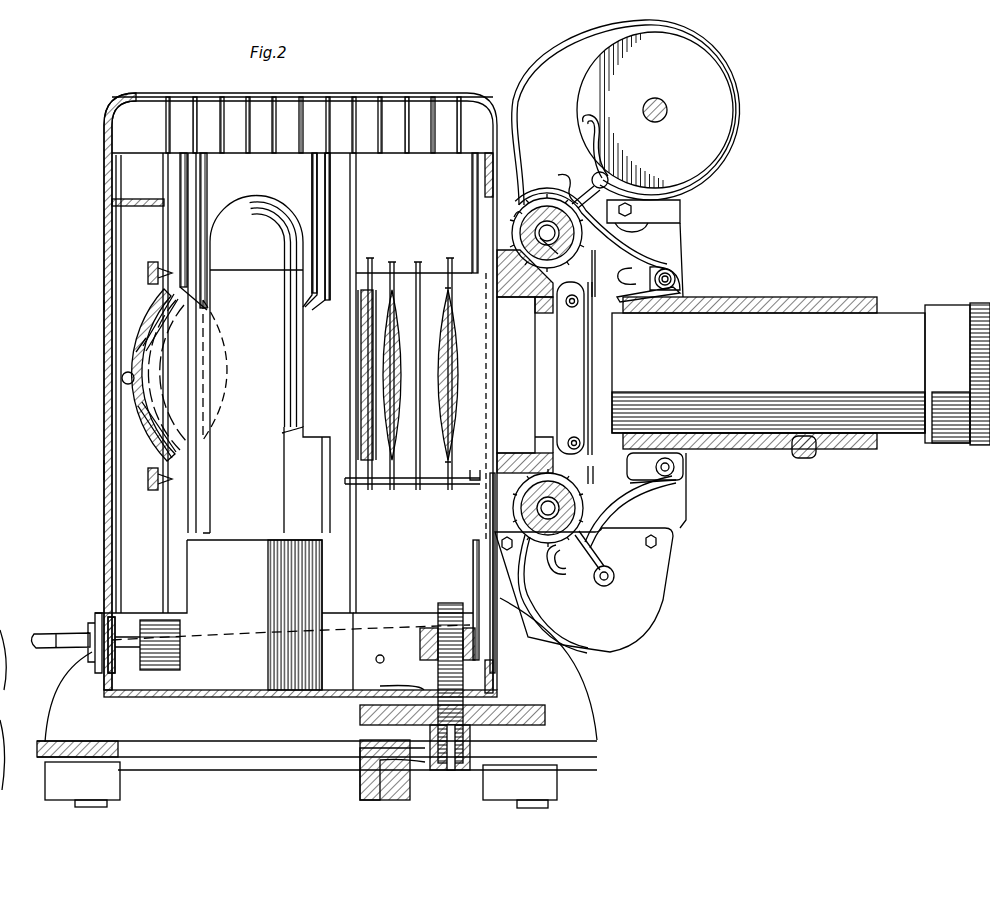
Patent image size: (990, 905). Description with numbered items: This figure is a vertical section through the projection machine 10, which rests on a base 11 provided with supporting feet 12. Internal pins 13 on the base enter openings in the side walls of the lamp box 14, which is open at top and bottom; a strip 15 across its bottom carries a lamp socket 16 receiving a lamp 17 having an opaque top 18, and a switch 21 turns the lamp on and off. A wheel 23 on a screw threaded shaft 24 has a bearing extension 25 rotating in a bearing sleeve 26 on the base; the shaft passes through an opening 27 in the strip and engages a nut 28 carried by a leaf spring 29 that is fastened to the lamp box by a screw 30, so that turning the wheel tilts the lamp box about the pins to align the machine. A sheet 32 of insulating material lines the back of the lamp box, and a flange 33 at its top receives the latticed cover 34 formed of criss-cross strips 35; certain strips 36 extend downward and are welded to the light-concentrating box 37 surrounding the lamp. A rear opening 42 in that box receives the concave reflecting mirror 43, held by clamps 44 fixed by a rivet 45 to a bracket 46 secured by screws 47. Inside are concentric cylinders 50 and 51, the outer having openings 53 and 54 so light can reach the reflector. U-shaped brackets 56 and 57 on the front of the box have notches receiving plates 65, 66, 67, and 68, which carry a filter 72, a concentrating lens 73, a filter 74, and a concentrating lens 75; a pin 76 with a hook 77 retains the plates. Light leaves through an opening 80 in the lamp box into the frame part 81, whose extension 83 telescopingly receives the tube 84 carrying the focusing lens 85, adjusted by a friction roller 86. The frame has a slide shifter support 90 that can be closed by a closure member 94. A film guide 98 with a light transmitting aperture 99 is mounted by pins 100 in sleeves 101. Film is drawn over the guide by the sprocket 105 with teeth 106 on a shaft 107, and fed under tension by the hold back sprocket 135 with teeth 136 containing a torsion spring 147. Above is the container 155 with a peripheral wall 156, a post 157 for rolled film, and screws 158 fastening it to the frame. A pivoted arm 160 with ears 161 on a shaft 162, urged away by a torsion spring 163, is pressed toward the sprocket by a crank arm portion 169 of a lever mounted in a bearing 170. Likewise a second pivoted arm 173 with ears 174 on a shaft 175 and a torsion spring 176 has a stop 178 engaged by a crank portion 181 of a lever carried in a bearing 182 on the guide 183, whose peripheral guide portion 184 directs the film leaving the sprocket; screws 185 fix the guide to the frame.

The projection machine 10 is at (98, 308).
The base 11 is at (268, 745).
The supporting feet 12 is at (557, 788).
The internal pins 13 is at (376, 659).
The lamp box 14 is at (104, 470).
The strip 15 is at (156, 697).
The lamp socket 16 is at (242, 685).
The lamp 17 is at (300, 432).
The opaque top 18 is at (260, 208).
The switch 21 is at (96, 623).
The wheel 23 is at (540, 706).
The screw threaded shaft 24 is at (438, 668).
The bearing extension 25 is at (448, 762).
The bearing sleeve 26 is at (432, 770).
The opening 27 is at (400, 682).
The nut 28 is at (420, 643).
The leaf spring 29 is at (473, 574).
The screw 30 is at (490, 470).
The sheet of insulating material 32 is at (116, 250).
The flange 33 is at (118, 196).
The latticed cover 34 is at (112, 106).
The lattice strips 35 is at (407, 97).
The lattice strips 36 is at (330, 97).
The light-concentrating box 37 is at (356, 573).
The opening 42 is at (150, 318).
The concave reflecting mirror 43 is at (150, 402).
The clamps 44 is at (136, 350).
The rivet 45 is at (122, 378).
The bracket 46 is at (140, 424).
The screws 47 is at (148, 478).
The inner cylinder 50 is at (207, 170).
The outer cylinder 51 is at (189, 187).
The opening 53 is at (206, 300).
The opening 54 is at (312, 292).
The U-shaped bracket 56 is at (472, 210).
The U-shaped bracket 57 is at (480, 527).
The plate 65 is at (370, 490).
The plate 66 is at (392, 490).
The plate 67 is at (420, 490).
The plate 68 is at (450, 490).
The filter 72 is at (361, 362).
The concentrating lens 73 is at (361, 340).
The filter 74 is at (428, 398).
The concentrating lens 75 is at (460, 345).
The pin 76 is at (394, 480).
The hook 77 is at (460, 472).
The opening 80 is at (498, 297).
The frame part 81 is at (545, 430).
The extension 83 is at (768, 300).
The tube 84 is at (828, 330).
The focusing lens 85 is at (948, 320).
The friction roller 86 is at (806, 458).
The slide shifter support 90 is at (525, 375).
The closure member 94 is at (512, 453).
The film guide 98 is at (557, 345).
The light transmitting aperture 99 is at (592, 400).
The pins 100 is at (582, 372).
The sleeves 101 is at (582, 372).
The sprocket 105 is at (565, 500).
The teeth 106 is at (594, 472).
The shaft 107 is at (512, 551).
The hold back and reverse feed sprocket 135 is at (550, 228).
The teeth 136 is at (518, 212).
The torsion spring 147 is at (556, 258).
The container 155 is at (722, 124).
The peripheral wall 156 is at (749, 96).
The post 157 is at (662, 98).
The screws 158 is at (631, 212).
The pivoted arm 160 is at (649, 260).
The ears 161 is at (680, 276).
The shaft 162 is at (676, 280).
The torsion spring 163 is at (622, 266).
The crank arm portion 169 is at (590, 196).
The bearing 170 is at (592, 164).
The second pivoted arm 173 is at (616, 516).
The ears 174 is at (686, 462).
The shaft 175 is at (684, 480).
The torsion spring 176 is at (652, 465).
The stop 178 is at (588, 550).
The crank portion 181 is at (604, 556).
The bearing 182 is at (604, 586).
The guide 183 is at (656, 590).
The peripheral guide portion 184 is at (570, 650).
The screws 185 is at (660, 545).